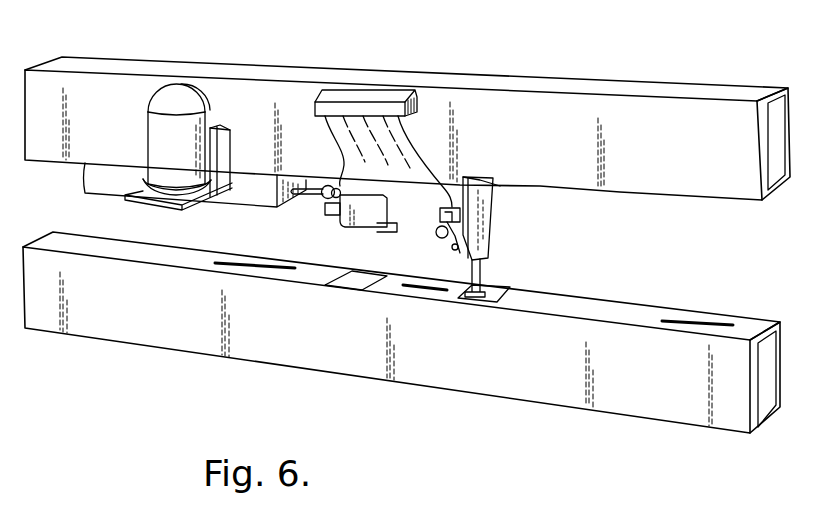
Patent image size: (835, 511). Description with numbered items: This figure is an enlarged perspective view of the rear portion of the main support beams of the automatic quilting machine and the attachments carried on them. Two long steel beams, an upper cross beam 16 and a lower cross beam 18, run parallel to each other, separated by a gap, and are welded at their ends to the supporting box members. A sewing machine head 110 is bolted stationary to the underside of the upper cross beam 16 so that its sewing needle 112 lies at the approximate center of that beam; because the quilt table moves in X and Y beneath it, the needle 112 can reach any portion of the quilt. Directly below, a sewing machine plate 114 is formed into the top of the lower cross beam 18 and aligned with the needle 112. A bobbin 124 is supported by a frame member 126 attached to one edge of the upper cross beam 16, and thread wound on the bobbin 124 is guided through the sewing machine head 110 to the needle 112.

The upper cross beam 16 is at (545, 107).
The lower cross beam 18 is at (137, 330).
The sewing machine head 110 is at (500, 230).
The sewing needle 112 is at (482, 279).
The sewing machine plate 114 is at (457, 300).
The bobbin 124 is at (153, 152).
The frame member 126 is at (230, 125).